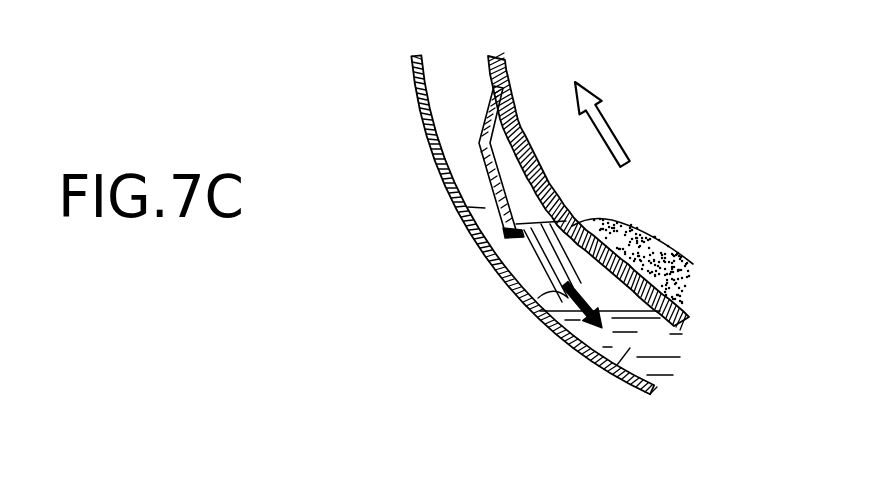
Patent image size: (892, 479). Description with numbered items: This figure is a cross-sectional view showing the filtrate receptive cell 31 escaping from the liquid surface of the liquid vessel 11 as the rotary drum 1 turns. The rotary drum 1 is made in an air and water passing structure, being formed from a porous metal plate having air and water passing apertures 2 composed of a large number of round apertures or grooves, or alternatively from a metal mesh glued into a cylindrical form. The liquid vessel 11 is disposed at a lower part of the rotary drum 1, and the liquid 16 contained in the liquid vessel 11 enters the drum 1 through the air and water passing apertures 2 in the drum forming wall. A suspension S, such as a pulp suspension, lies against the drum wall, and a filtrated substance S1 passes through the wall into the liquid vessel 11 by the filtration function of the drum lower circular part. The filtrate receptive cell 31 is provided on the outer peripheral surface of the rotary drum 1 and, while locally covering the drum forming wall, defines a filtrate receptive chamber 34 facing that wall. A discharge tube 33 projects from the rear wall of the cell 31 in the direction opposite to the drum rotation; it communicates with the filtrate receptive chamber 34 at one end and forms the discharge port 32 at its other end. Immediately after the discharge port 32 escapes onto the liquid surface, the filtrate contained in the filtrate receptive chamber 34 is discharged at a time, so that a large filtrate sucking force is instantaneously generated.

The liquid vessel 11 is at (425, 122).
The rotary drum 1 is at (508, 88).
The air and water passing apertures 2 is at (535, 158).
The filtrate receptive chamber 34 is at (496, 167).
The filtrate receptive cell 31 is at (468, 207).
The discharge tube 33 is at (533, 262).
The discharge port 32 is at (540, 308).
The filtrated substance S1 is at (590, 323).
The liquid 16 is at (608, 372).
The suspension S is at (655, 241).